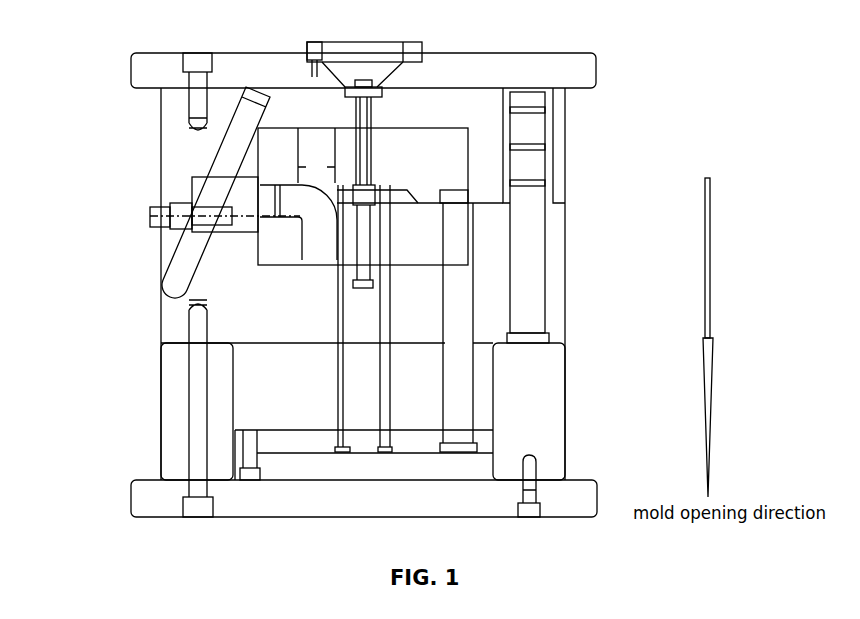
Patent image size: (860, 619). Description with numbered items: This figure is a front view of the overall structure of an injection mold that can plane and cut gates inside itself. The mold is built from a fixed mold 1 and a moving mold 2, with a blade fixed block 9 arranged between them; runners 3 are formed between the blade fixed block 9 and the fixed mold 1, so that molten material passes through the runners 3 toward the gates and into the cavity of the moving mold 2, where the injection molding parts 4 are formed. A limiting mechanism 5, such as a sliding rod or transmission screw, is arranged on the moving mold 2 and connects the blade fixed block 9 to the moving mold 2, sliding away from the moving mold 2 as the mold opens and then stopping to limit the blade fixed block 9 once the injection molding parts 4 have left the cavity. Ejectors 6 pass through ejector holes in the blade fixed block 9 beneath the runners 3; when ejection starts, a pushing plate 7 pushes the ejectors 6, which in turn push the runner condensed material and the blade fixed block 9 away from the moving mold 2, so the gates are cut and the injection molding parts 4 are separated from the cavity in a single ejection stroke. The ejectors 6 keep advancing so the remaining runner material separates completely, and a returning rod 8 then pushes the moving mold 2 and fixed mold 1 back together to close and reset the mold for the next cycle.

The fixed mold 1 is at (433, 115).
The moving mold 2 is at (405, 240).
The runners 3 is at (395, 188).
The injection molding parts 4 is at (337, 167).
The limiting mechanism 5 is at (362, 250).
The ejectors 6 is at (347, 358).
The pushing plate 7 is at (70, 438).
The returning rod 8 is at (457, 425).
The blade fixed block 9 is at (290, 196).